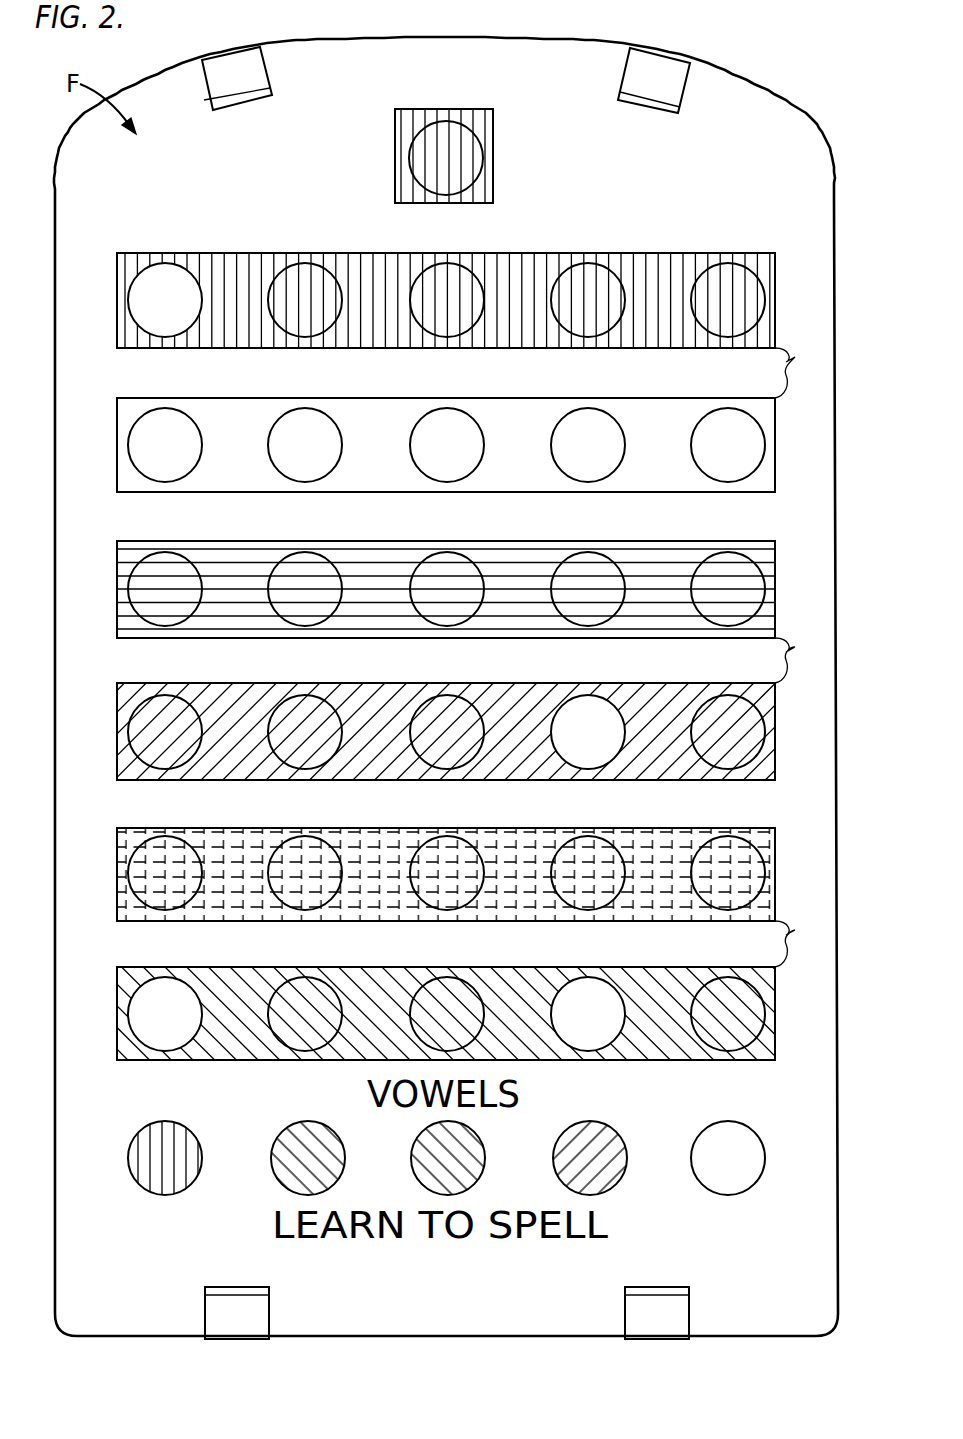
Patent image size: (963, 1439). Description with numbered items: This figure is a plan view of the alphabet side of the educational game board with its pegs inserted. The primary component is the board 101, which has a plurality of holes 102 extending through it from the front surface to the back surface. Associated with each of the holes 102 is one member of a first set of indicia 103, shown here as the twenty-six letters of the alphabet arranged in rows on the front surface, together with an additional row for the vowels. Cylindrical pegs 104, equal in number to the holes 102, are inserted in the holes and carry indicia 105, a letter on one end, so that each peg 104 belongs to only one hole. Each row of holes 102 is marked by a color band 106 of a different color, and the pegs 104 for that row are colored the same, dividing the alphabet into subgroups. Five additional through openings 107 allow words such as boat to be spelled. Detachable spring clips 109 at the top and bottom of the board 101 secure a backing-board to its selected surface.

The board 101 is at (541, 56).
The holes 102 is at (183, 268).
The first set of indicia 103 is at (153, 222).
The pegs 104 is at (467, 147).
The indicia 105 is at (280, 292).
The color bands 106 is at (491, 656).
The additional through openings 107 is at (162, 1195).
The spring clips 109 is at (237, 68).